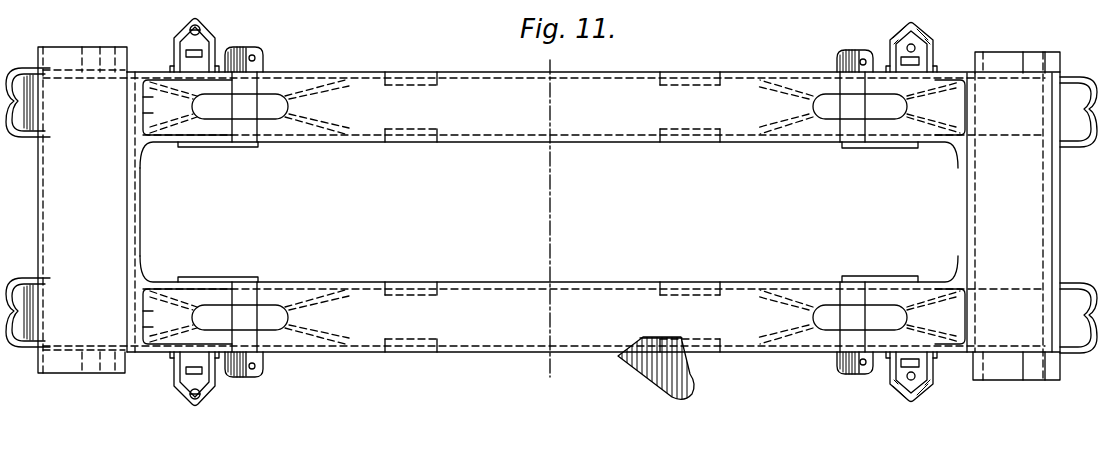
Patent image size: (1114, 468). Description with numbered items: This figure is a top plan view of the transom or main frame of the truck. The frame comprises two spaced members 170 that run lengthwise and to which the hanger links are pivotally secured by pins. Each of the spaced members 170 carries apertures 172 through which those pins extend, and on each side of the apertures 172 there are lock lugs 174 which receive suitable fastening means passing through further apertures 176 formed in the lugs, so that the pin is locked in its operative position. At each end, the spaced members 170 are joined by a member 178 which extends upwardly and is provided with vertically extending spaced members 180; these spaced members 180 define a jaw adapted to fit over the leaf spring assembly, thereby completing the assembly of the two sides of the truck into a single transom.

The spaced members 170 is at (628, 123).
The apertures 172 is at (810, 332).
The lock lugs 174 is at (822, 215).
The apertures 176 is at (822, 58).
The member 178 is at (1033, 216).
The vertically extending spaced members 180 is at (1043, 230).